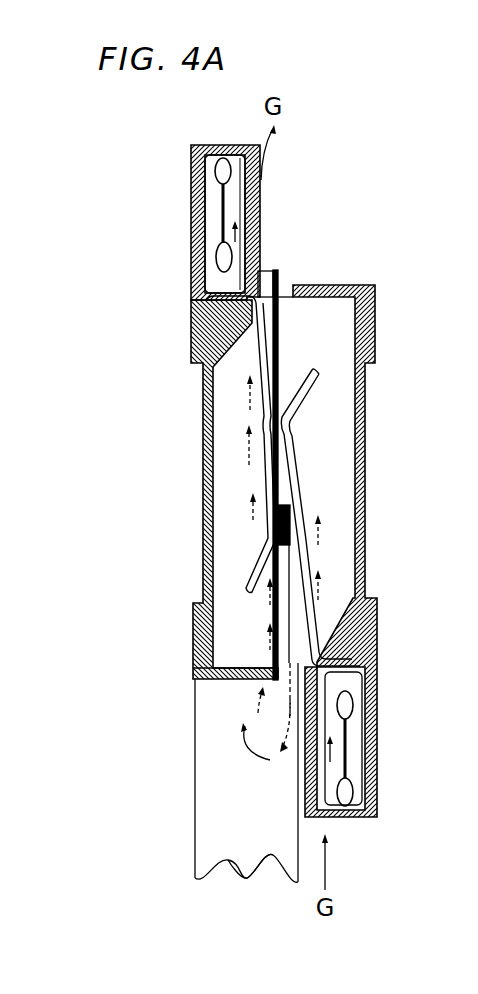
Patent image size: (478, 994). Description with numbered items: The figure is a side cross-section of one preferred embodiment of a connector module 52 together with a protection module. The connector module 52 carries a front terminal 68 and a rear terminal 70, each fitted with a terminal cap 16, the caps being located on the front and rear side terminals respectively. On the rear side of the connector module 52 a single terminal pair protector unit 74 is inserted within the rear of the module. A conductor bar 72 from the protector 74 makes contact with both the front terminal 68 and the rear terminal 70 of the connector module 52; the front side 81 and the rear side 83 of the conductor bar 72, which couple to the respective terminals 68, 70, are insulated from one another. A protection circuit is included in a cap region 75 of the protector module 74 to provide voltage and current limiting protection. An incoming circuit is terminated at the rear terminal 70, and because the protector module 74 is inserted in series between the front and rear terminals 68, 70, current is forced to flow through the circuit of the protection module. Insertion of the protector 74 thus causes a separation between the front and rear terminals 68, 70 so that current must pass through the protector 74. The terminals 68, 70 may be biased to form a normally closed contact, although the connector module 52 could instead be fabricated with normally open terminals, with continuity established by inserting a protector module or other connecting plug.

The terminal cap 16 is at (192, 145).
The front terminal 68 is at (207, 222).
The connector module 52 is at (201, 441).
The front side of conductor bar 81 is at (277, 660).
The conductor bar 72 is at (287, 602).
The rear side of conductor bar 83 is at (305, 547).
The rear terminal 70 is at (357, 750).
The cap region 75 is at (215, 745).
The single terminal pair protector unit 74 is at (215, 870).